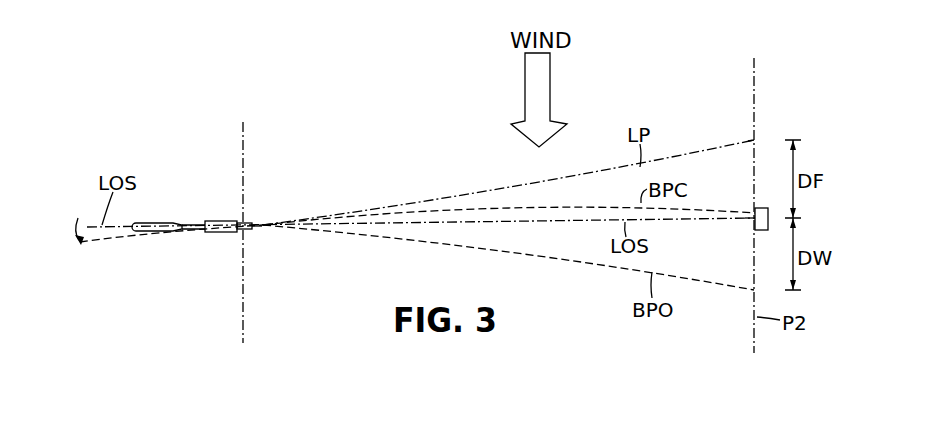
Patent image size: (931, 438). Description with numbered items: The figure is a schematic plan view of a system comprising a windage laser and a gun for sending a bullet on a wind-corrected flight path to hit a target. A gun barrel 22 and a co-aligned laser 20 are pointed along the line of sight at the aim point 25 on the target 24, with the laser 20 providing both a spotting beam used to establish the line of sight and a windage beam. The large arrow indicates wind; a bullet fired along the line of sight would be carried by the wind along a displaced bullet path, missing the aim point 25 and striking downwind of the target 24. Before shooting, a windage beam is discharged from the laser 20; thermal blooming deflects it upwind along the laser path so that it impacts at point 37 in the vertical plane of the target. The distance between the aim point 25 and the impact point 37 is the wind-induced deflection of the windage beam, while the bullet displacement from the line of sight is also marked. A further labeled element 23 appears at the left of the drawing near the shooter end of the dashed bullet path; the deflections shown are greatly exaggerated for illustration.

The laser 20 is at (217, 220).
The gun barrel 22 is at (183, 231).
The bore axis line 23 is at (118, 240).
The target 24 is at (767, 207).
The aim point 25 is at (753, 220).
The impact point of the windage beam 37 is at (753, 137).